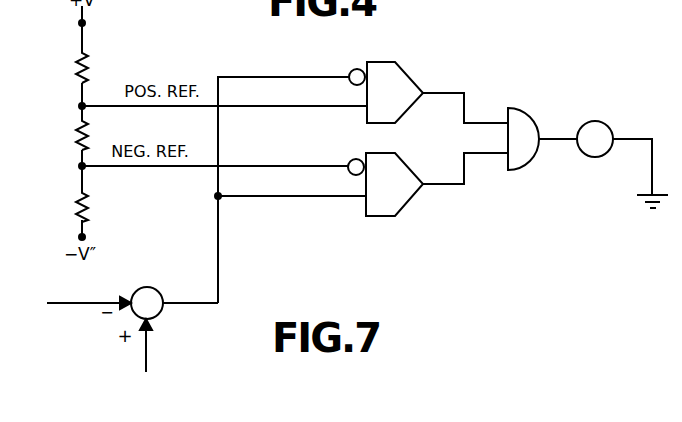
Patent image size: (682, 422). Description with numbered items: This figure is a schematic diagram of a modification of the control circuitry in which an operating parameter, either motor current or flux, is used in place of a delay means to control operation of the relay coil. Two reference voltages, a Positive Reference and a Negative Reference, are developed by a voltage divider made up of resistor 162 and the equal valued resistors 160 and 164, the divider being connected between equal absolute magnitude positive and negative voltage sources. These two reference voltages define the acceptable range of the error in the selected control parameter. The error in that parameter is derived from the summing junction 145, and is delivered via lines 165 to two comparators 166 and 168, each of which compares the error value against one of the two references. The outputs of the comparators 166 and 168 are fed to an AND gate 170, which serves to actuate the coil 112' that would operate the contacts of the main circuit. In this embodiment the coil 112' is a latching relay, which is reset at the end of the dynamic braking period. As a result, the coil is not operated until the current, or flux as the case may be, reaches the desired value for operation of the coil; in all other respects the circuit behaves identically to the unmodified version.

The resistor 160 is at (72, 68).
The resistor 162 is at (70, 135).
The resistor 164 is at (70, 212).
The summing junction 145 is at (163, 312).
The lines 165 is at (219, 281).
The comparator 166 is at (406, 77).
The comparator 168 is at (414, 170).
The AND gate 170 is at (534, 112).
The coil 112' is at (622, 144).